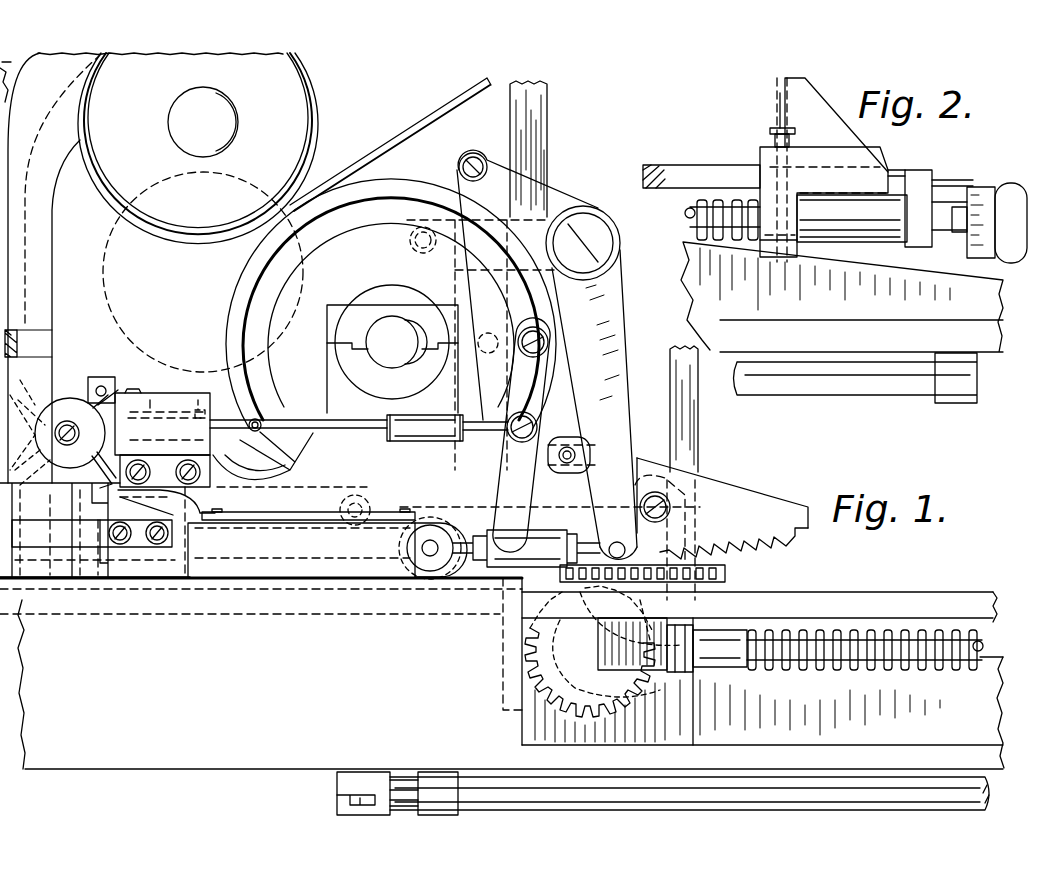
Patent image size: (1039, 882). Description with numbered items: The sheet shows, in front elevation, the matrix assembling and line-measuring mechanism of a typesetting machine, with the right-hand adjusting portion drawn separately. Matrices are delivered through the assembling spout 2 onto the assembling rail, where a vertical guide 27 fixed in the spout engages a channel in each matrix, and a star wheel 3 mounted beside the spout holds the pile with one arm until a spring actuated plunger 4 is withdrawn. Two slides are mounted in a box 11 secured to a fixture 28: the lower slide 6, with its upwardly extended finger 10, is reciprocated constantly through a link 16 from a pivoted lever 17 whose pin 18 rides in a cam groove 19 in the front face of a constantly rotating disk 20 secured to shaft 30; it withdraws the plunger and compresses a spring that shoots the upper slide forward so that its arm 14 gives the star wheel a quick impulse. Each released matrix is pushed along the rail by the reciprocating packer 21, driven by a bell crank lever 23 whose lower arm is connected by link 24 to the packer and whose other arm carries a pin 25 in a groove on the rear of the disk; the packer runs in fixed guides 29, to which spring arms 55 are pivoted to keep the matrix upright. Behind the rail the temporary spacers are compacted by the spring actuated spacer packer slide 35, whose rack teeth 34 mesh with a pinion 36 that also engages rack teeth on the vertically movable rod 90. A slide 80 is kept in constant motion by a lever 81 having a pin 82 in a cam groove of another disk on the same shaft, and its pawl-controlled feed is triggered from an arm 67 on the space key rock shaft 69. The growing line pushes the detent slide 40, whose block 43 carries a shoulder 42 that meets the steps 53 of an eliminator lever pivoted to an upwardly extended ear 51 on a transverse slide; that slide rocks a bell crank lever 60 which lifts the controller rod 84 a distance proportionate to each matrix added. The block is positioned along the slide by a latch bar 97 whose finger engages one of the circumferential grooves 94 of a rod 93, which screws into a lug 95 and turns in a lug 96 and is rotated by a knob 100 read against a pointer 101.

In FIG. 1, the assembling spout 2 is at (141, 268).
In FIG. 1, the star wheel 3 is at (66, 398).
In FIG. 1, the spring actuated plunger 4 is at (101, 386).
In FIG. 1, the slide 6 is at (250, 432).
In FIG. 1, the upwardly extended finger 10 is at (205, 405).
In FIG. 1, the box 11 is at (162, 424).
In FIG. 1, the arm 14 is at (133, 389).
In FIG. 2, the arm 14 is at (842, 229).
In FIG. 1, the link 16 is at (355, 432).
In FIG. 1, the pivoted lever 17 is at (522, 411).
In FIG. 1, the pin 18 is at (550, 343).
In FIG. 1, the cam groove 19 is at (391, 303).
In FIG. 1, the rotating disk 20 is at (391, 315).
In FIG. 1, the reciprocating packer 21 is at (437, 572).
In FIG. 1, the bell crank lever 23 is at (547, 354).
In FIG. 1, the link 24 is at (527, 487).
In FIG. 1, the pin 25 is at (410, 248).
In FIG. 1, the vertical guide 27 is at (29, 343).
In FIG. 1, the fixture 28 is at (165, 471).
In FIG. 1, the fixed guides 29 is at (444, 532).
In FIG. 1, the shaft 30 is at (392, 359).
In FIG. 1, the rack teeth 34 is at (727, 573).
In FIG. 1, the spacer packer slide 35 is at (700, 590).
In FIG. 1, the pinion 36 is at (590, 651).
In FIG. 1, the detent slide 40 is at (502, 673).
In FIG. 2, the detent slide 40 is at (701, 177).
In FIG. 2, the shoulder 42 is at (778, 90).
In FIG. 2, the block 43 is at (824, 167).
In FIG. 1, the upwardly extended ear 51 is at (665, 537).
In FIG. 1, the steps 53 is at (760, 528).
In FIG. 1, the spring arms 55 is at (107, 530).
In FIG. 1, the bell crank lever 60 is at (632, 659).
In FIG. 1, the arm 67 is at (441, 778).
In FIG. 1, the space key rock shaft 69 is at (633, 780).
In FIG. 1, the slide 80 is at (360, 497).
In FIG. 1, the lever 81 is at (459, 170).
In FIG. 1, the pin 82 is at (488, 333).
In FIG. 1, the controller rod 84 is at (699, 415).
In FIG. 1, the rod 90 is at (536, 122).
In FIG. 1, the rod 93 is at (720, 648).
In FIG. 1, the circumferential grooves 94 is at (860, 668).
In FIG. 1, the lug 95 is at (666, 662).
In FIG. 2, the lug 96 is at (926, 250).
In FIG. 2, the latch bar 97 is at (790, 148).
In FIG. 2, the knob 100 is at (1012, 186).
In FIG. 2, the pointer 101 is at (950, 190).